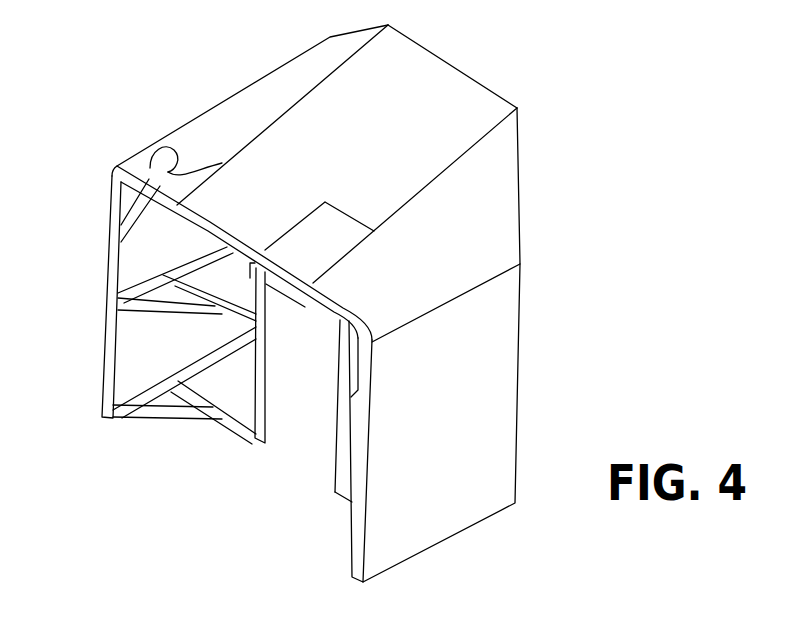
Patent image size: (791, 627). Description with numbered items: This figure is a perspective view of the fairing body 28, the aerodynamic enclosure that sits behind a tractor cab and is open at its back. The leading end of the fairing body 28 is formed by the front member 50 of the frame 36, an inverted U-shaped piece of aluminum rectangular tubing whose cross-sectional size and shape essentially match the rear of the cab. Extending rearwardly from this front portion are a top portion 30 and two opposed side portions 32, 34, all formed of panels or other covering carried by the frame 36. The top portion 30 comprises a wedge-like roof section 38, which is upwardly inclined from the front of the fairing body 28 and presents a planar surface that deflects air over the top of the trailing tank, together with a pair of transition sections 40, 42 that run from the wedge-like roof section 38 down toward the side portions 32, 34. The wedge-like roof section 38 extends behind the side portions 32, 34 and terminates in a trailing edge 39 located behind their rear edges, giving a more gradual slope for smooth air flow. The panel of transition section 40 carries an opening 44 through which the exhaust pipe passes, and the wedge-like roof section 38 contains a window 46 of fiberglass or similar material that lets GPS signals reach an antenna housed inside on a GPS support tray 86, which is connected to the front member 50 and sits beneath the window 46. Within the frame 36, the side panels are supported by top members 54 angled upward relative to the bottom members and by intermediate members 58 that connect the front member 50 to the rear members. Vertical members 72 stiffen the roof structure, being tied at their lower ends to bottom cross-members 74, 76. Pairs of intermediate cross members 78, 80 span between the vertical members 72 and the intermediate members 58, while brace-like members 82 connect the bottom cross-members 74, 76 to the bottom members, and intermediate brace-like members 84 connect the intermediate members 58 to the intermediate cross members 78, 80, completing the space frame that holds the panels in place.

The fairing body 28 is at (590, 235).
The top portion 30 is at (532, 137).
The side portion 32 is at (143, 362).
The side portion 34 is at (440, 523).
The frame 36 is at (232, 462).
The wedge-like roof section 38 is at (468, 108).
The trailing edge 39 is at (425, 47).
The transition section 40 is at (220, 123).
The transition section 42 is at (453, 283).
The opening 44 is at (222, 163).
The window 46 is at (327, 240).
The front member 50 is at (357, 548).
The top member 54 is at (132, 221).
The intermediate member 58 is at (167, 280).
The vertical member 72 is at (338, 427).
The bottom cross-member 74 is at (225, 420).
The bottom cross-member 76 is at (346, 502).
The intermediate cross member 78 is at (238, 309).
The intermediate cross member 80 is at (352, 392).
The brace-like member 82 is at (180, 421).
The intermediate brace-like member 84 is at (178, 317).
The GPS support tray 86 is at (293, 289).